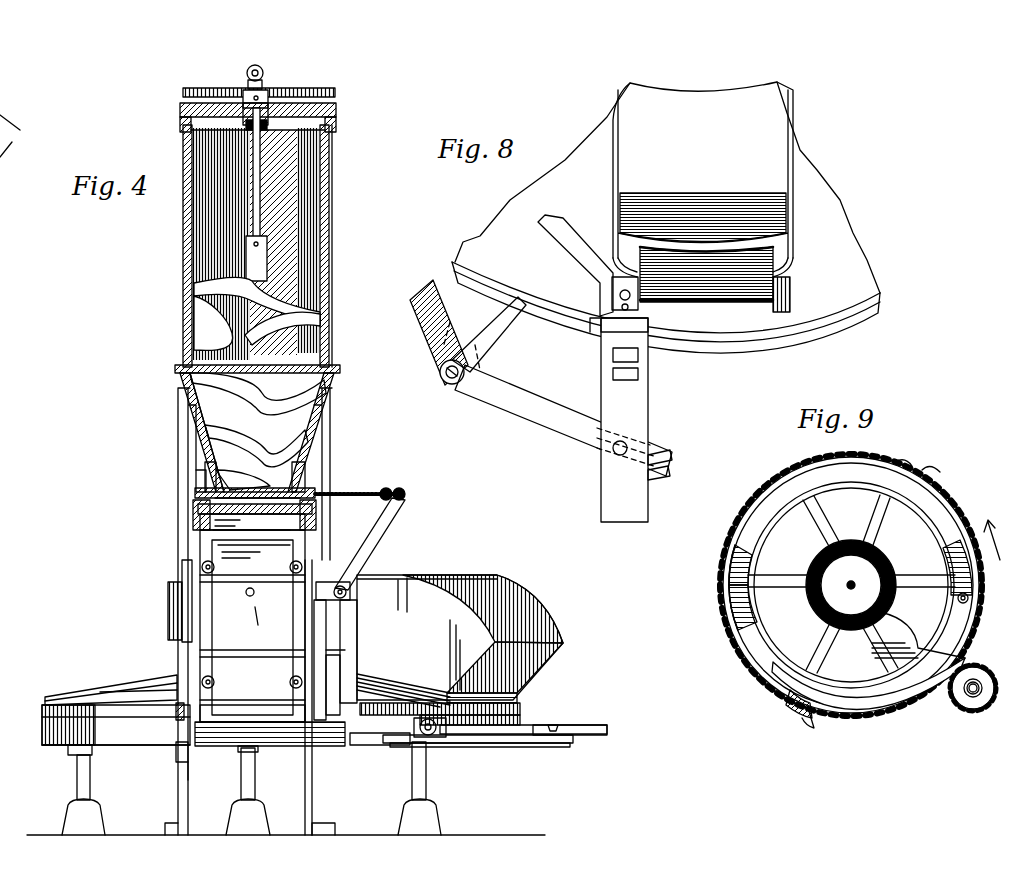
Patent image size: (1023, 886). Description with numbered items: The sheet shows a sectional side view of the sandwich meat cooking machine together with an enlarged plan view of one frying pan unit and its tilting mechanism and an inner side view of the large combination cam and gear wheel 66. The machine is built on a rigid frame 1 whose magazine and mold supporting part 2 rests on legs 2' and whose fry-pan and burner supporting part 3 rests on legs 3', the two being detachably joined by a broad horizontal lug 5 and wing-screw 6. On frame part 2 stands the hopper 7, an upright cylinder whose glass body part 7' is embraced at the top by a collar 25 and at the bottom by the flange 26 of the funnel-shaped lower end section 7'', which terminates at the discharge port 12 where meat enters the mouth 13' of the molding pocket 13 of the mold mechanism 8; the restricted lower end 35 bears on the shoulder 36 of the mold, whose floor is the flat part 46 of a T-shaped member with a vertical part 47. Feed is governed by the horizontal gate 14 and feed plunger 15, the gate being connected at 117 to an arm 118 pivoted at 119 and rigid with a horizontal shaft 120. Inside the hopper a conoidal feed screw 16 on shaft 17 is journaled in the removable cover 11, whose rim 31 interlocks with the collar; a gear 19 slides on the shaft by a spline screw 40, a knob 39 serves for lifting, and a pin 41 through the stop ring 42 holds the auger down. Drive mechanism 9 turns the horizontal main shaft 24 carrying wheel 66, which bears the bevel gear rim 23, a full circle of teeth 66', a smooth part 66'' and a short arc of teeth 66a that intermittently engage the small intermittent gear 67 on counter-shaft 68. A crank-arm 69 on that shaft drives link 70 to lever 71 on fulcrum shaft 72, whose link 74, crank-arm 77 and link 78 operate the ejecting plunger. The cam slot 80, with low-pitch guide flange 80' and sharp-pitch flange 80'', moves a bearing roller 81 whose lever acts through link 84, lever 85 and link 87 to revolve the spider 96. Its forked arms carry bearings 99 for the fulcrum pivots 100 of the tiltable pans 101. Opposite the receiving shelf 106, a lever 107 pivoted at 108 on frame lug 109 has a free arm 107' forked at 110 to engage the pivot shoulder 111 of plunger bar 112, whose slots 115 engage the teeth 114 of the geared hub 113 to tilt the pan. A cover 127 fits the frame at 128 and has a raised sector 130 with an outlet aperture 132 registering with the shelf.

In FIG. 4, the frame 1 is at (218, 658).
In FIG. 4, the magazine and mold supporting part 2 is at (242, 532).
In FIG. 4, the legs 2' is at (250, 697).
In FIG. 4, the fry-pan and burner supporting part 3 is at (322, 750).
In FIG. 8, the fry-pan and burner supporting part 3 is at (668, 307).
In FIG. 4, the legs 3' is at (255, 788).
In FIG. 4, the horizontal lug 5 is at (213, 746).
In FIG. 4, the wing-screw 6 is at (256, 752).
In FIG. 4, the hopper 7 is at (246, 246).
In FIG. 4, the body part 7' is at (350, 246).
In FIG. 4, the lower end section 7'' is at (280, 432).
In FIG. 4, the mold mechanism 8 is at (312, 492).
In FIG. 9, the drive mechanism 9 is at (996, 551).
In FIG. 4, the cover 11 is at (337, 106).
In FIG. 4, the discharge port 12 is at (300, 480).
In FIG. 4, the molding pocket 13 is at (251, 521).
In FIG. 4, the mouth 13' is at (232, 464).
In FIG. 4, the horizontal gate 14 is at (365, 494).
In FIG. 4, the feed plunger 15 is at (198, 508).
In FIG. 4, the conoidal feed screw 16 is at (332, 316).
In FIG. 4, the shaft 17 is at (261, 212).
In FIG. 4, the gear 19 is at (300, 88).
In FIG. 9, the bevel gear rim 23 is at (812, 565).
In FIG. 9, the horizontal main shaft 24 is at (850, 590).
In FIG. 4, the collar 25 is at (336, 130).
In FIG. 4, the flange 26 is at (341, 370).
In FIG. 4, the rim 31 is at (336, 116).
In FIG. 4, the restricted lower end 35 is at (200, 478).
In FIG. 4, the shoulder 36 is at (312, 488).
In FIG. 4, the knob 39 is at (247, 73).
In FIG. 4, the spline screw 40 is at (243, 98).
In FIG. 4, the pin 41 is at (266, 127).
In FIG. 4, the stop ring 42 is at (248, 128).
In FIG. 4, the flat part 46 is at (256, 521).
In FIG. 4, the vertical part 47 is at (210, 524).
In FIG. 9, the combination cam and gear wheel 66 is at (860, 585).
In FIG. 9, the full circle of teeth 66' is at (943, 463).
In FIG. 9, the smooth part 66'' is at (910, 452).
In FIG. 9, the teeth 66a is at (810, 710).
In FIG. 4, the intermittent gear 67 is at (168, 639).
In FIG. 9, the intermittent gear 67 is at (980, 668).
In FIG. 4, the counter-shaft 68 is at (266, 623).
In FIG. 9, the counter-shaft 68 is at (965, 694).
In FIG. 4, the crank-arm 69 is at (327, 635).
In FIG. 4, the link 70 is at (345, 668).
In FIG. 4, the lever 71 is at (345, 655).
In FIG. 4, the fulcrum shaft 72 is at (252, 707).
In FIG. 4, the link 74 is at (332, 430).
In FIG. 4, the crank-arm 77 is at (180, 680).
In FIG. 4, the link 78 is at (178, 424).
In FIG. 9, the cam slot 80 is at (833, 585).
In FIG. 9, the guide flange member 80' is at (722, 587).
In FIG. 9, the guide flange member 80'' is at (868, 676).
In FIG. 9, the bearing roller 81 is at (970, 600).
In FIG. 4, the link 84 is at (182, 702).
In FIG. 4, the lever 85 is at (169, 782).
In FIG. 4, the link 87 is at (178, 772).
In FIG. 8, the spider 96 is at (572, 228).
In FIG. 8, the bearings 99 is at (611, 298).
In FIG. 8, the fulcrum pivots 100 is at (718, 290).
In FIG. 8, the tiltable pan 101 is at (780, 118).
In FIG. 4, the receiving shelf 106 is at (597, 725).
In FIG. 4, the lever 107 is at (376, 748).
In FIG. 8, the lever 107 is at (430, 332).
In FIG. 4, the free arm 107' is at (480, 760).
In FIG. 8, the free arm 107' is at (563, 410).
In FIG. 4, the pivot 108 is at (428, 745).
In FIG. 4, the frame lug 109 is at (420, 740).
In FIG. 8, the frame lug 109 is at (505, 338).
In FIG. 8, the fork 110 is at (670, 458).
In FIG. 8, the pivot shoulder 111 is at (628, 445).
In FIG. 4, the plunger bar 112 is at (555, 724).
In FIG. 8, the plunger bar 112 is at (632, 410).
In FIG. 8, the geared hub 113 is at (646, 262).
In FIG. 8, the teeth 114 is at (645, 303).
In FIG. 8, the slots 115 is at (636, 375).
In FIG. 4, the connection 117 is at (406, 494).
In FIG. 4, the arm 118 is at (394, 520).
In FIG. 4, the pivot 119 is at (348, 598).
In FIG. 4, the horizontal shaft 120 is at (350, 589).
In FIG. 4, the cover 127 is at (68, 694).
In FIG. 4, the cover seat 128 is at (42, 708).
In FIG. 8, the cover seat 128 is at (880, 296).
In FIG. 4, the raised sector 130 is at (455, 575).
In FIG. 4, the outlet aperture 132 is at (530, 665).